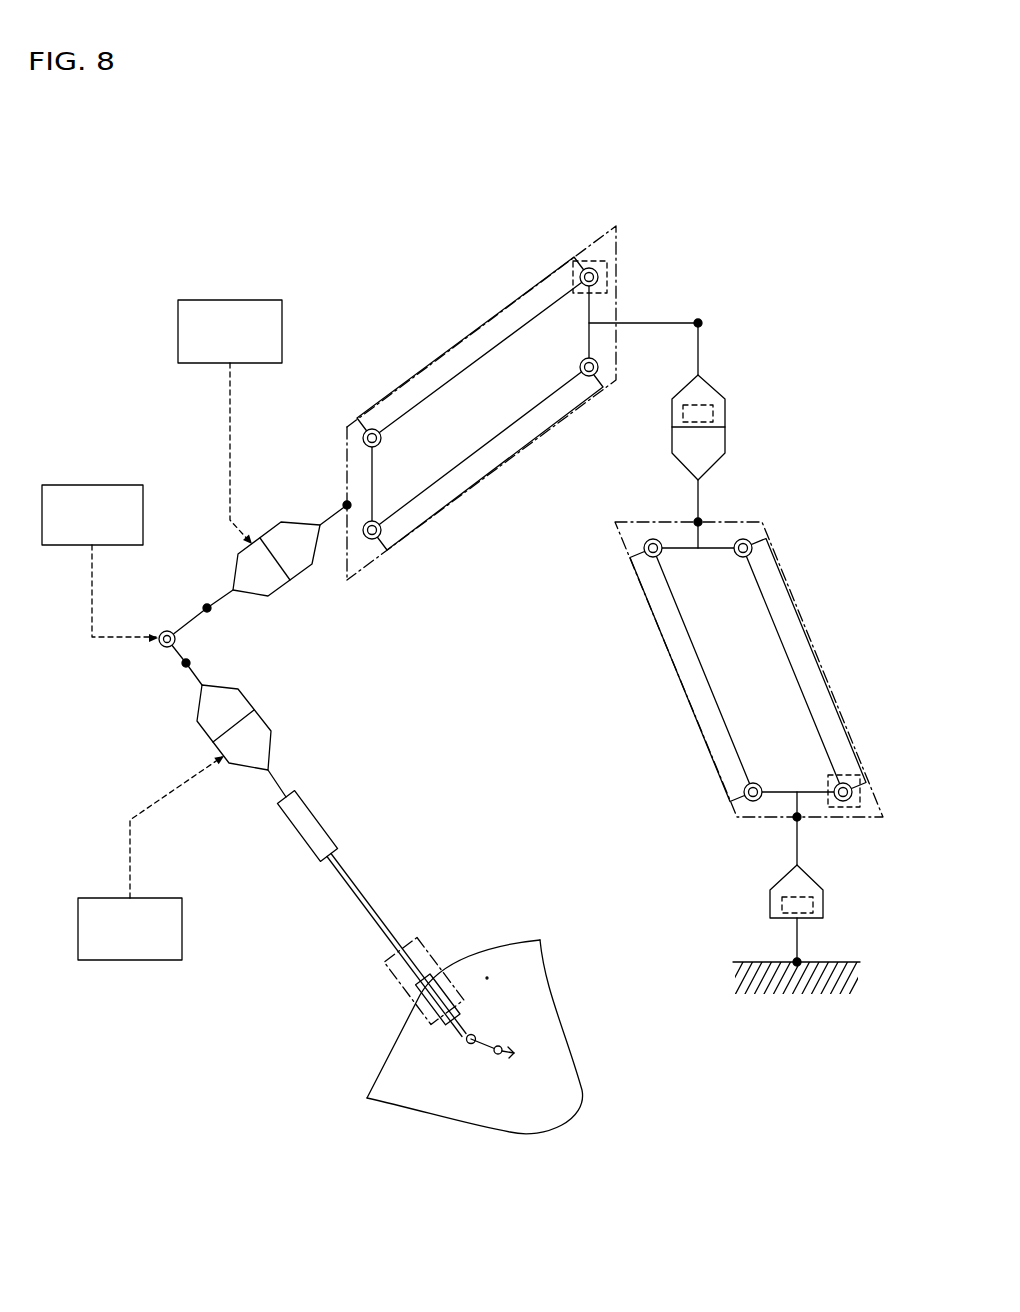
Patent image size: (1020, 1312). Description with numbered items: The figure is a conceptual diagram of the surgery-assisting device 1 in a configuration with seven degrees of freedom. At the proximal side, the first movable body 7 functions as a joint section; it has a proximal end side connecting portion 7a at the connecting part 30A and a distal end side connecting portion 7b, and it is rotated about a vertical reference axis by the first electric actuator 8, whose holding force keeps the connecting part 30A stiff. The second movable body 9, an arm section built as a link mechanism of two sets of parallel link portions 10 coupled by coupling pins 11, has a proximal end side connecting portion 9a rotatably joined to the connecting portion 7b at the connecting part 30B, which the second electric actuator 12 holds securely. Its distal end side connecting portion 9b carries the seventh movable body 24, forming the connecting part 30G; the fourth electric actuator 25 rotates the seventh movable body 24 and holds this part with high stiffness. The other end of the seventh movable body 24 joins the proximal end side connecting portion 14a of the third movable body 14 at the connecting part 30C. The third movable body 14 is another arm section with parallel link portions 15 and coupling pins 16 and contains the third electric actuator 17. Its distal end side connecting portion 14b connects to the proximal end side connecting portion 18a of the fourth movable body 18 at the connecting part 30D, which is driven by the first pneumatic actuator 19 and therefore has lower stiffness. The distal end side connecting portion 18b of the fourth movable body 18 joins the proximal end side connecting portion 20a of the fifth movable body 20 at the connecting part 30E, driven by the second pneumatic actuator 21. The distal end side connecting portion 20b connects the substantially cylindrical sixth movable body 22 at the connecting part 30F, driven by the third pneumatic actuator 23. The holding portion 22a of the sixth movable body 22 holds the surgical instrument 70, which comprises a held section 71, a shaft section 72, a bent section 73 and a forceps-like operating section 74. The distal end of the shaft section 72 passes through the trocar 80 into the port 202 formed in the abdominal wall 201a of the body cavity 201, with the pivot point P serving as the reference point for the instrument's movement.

The surgery-assisting device 1 is at (816, 90).
The first movable body 7 is at (825, 900).
The proximal end side connecting portion 7a is at (799, 935).
The distal end side connecting portion 7b is at (799, 847).
The first electric actuator 8 is at (769, 908).
The second movable body 9 is at (825, 650).
The proximal end side connecting portion 9a is at (795, 800).
The distal end side connecting portion 9b is at (727, 542).
The parallel link portions 10 is at (703, 543).
The coupling pins 11 is at (748, 556).
The second electric actuator 12 is at (847, 778).
The third movable body 14 is at (454, 326).
The proximal end side connecting portion 14a is at (603, 322).
The distal end side connecting portion 14b is at (347, 502).
The parallel link portions 15 is at (510, 333).
The coupling pins 16 is at (587, 270).
The third electric actuator 17 is at (595, 257).
The fourth movable body 18 is at (283, 597).
The proximal end side connecting portion 18a is at (322, 527).
The distal end side connecting portion 18b is at (230, 594).
The first pneumatic actuator 19 is at (227, 300).
The fifth movable body 20 is at (158, 650).
The proximal end side connecting portion 20a is at (200, 608).
The distal end side connecting portion 20b is at (165, 656).
The second pneumatic actuator 21 is at (65, 485).
The sixth movable body 22 is at (262, 724).
The holding portion 22a is at (272, 778).
The third pneumatic actuator 23 is at (100, 960).
The seventh movable body 24 is at (725, 418).
The fourth electric actuator 25 is at (705, 403).
The connecting part 30A is at (800, 957).
The connecting part 30B is at (793, 820).
The connecting part 30C is at (699, 320).
The connecting part 30D is at (345, 503).
The connecting part 30E is at (211, 613).
The connecting part 30F is at (185, 670).
The connecting part 30G is at (700, 520).
The surgical instrument 70 is at (383, 885).
The held section 71 is at (320, 832).
The shaft section 72 is at (345, 873).
The bent section 73 is at (478, 1040).
The operating section 74 is at (494, 1052).
The trocar 80 is at (433, 970).
The pivot point P is at (487, 978).
The body cavity 201 is at (560, 1050).
The abdominal wall 201a is at (377, 1078).
The port 202 is at (415, 993).